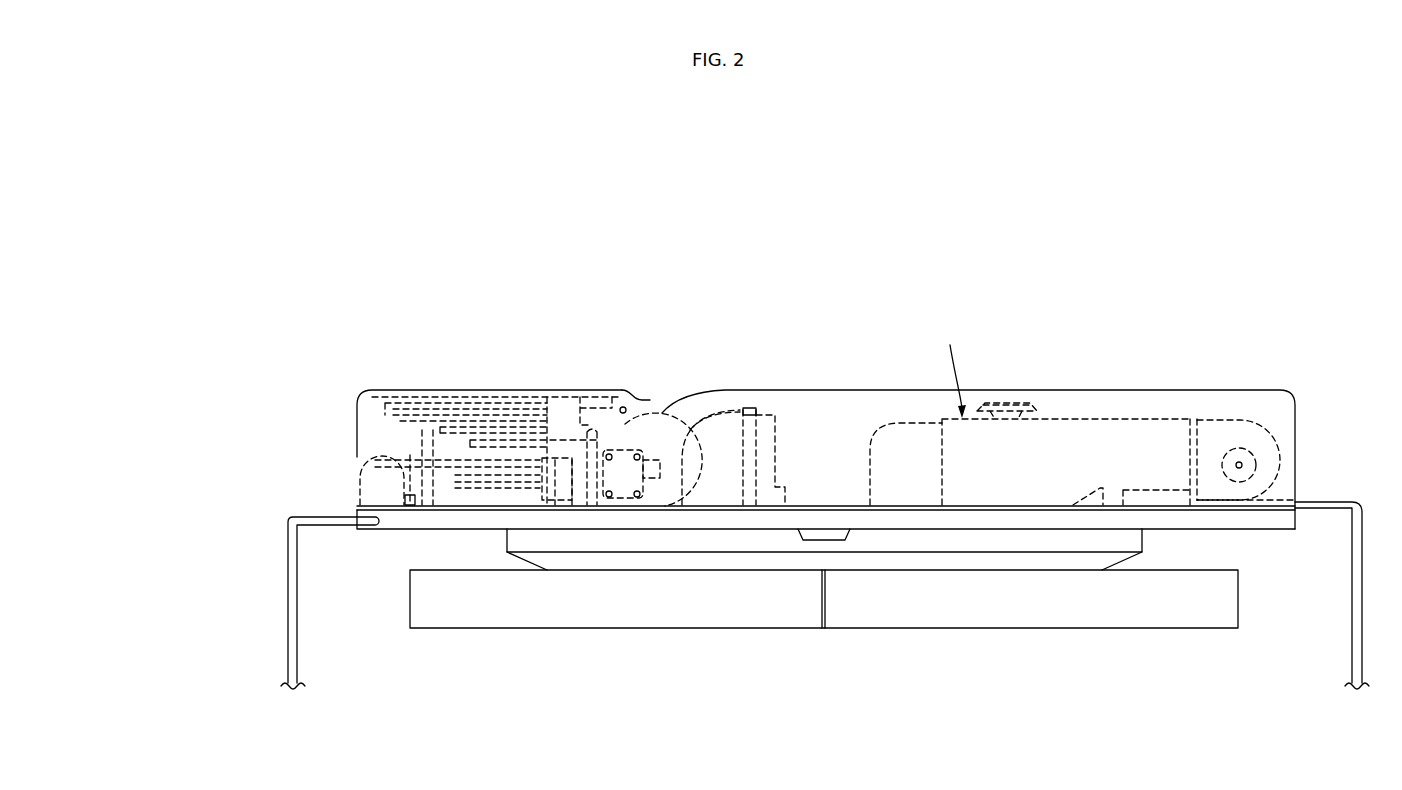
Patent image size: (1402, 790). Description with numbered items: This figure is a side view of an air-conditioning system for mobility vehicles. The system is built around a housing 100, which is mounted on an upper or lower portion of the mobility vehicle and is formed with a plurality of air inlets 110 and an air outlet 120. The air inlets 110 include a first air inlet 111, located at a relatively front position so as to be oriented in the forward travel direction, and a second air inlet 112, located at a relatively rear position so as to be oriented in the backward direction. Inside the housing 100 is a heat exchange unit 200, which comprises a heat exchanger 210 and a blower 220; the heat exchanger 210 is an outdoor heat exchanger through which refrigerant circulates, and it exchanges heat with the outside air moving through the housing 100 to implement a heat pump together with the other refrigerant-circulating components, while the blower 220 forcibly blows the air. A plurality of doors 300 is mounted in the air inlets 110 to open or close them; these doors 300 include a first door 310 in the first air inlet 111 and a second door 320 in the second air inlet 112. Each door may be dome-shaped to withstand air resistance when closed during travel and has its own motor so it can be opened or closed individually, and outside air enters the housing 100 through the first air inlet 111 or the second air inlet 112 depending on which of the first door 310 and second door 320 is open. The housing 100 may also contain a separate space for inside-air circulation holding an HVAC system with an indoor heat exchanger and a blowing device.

The housing 100 is at (582, 376).
The air inlets 110 is at (756, 379).
The first air inlet 111 is at (357, 457).
The second air inlet 112 is at (650, 415).
The air outlet 120 is at (508, 390).
The heat exchange unit 200 is at (443, 258).
The heat exchanger 210 is at (475, 452).
The blower 220 is at (473, 420).
The doors 300 is at (489, 394).
The first door 310 is at (372, 490).
The second door 320 is at (657, 428).